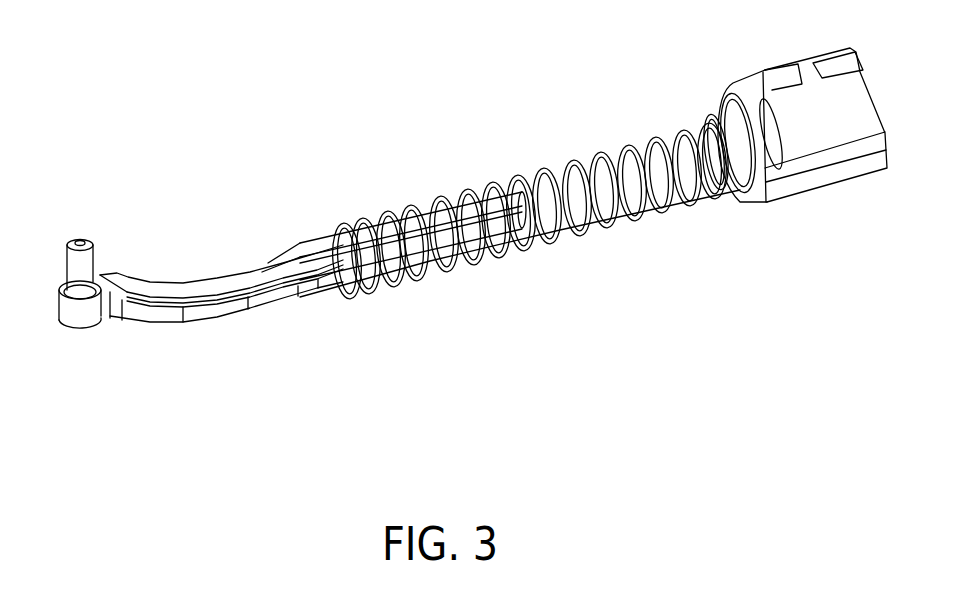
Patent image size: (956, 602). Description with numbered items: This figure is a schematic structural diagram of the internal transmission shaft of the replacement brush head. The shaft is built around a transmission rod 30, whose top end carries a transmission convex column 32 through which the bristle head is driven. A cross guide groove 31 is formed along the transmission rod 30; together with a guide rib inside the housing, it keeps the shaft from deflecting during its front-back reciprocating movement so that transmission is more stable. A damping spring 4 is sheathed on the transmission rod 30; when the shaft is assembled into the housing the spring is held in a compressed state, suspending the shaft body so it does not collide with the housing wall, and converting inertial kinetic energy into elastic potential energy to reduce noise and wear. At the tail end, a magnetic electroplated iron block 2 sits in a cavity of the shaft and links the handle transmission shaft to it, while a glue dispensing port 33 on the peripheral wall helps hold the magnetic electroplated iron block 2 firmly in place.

The magnetic electroplated iron block 2 is at (798, 140).
The damping spring 4 is at (453, 190).
The transmission rod 30 is at (593, 216).
The cross guide groove 31 is at (401, 248).
The transmission convex column 32 is at (83, 262).
The glue dispensing port 33 is at (783, 80).